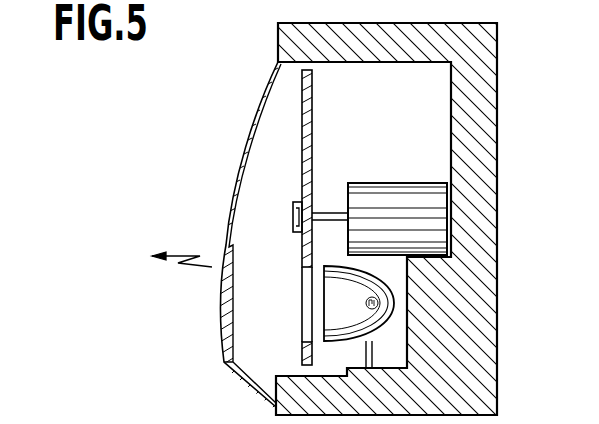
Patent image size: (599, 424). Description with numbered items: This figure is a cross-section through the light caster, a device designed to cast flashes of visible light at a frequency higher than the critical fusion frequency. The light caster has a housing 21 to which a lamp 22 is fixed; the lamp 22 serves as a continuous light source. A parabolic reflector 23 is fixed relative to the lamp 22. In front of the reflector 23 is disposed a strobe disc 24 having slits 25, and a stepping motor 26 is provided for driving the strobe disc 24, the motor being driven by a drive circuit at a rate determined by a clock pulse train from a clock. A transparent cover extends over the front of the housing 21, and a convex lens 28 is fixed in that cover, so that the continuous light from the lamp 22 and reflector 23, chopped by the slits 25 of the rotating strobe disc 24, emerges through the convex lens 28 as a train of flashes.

The housing 21 is at (487, 153).
The lamp 22 is at (390, 314).
The parabolic reflector 23 is at (354, 341).
The strobe disc 24 is at (313, 119).
The slits 25 is at (302, 305).
The stepping motor 26 is at (402, 190).
The convex lens 28 is at (222, 300).